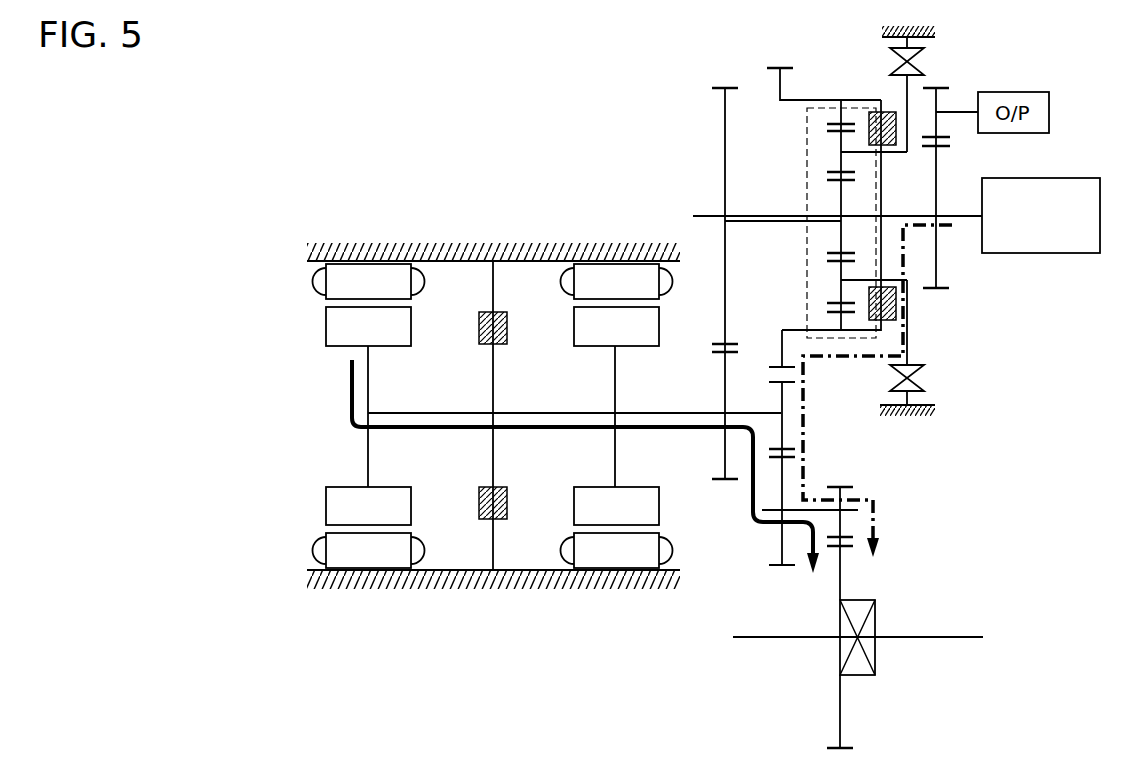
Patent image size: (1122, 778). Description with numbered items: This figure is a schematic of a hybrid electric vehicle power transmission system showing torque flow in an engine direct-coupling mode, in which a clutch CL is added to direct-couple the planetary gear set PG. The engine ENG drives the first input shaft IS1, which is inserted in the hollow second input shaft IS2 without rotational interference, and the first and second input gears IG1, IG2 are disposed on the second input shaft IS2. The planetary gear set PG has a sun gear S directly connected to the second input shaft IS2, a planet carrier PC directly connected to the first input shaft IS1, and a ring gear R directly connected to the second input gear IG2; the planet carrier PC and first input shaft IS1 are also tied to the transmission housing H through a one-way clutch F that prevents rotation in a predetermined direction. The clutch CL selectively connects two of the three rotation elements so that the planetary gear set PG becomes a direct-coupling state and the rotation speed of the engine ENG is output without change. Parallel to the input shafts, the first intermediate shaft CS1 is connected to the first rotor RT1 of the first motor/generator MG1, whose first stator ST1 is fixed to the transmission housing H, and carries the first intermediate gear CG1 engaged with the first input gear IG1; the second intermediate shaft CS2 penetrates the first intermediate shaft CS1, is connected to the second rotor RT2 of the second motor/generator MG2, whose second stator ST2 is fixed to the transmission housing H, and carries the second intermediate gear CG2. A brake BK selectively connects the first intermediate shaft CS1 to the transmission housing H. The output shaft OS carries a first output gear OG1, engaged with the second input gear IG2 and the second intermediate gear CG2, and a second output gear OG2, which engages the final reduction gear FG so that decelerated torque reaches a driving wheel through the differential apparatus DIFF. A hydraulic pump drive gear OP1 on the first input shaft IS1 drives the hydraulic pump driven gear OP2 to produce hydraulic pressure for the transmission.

The transmission housing H is at (519, 254).
The second stator ST2 is at (369, 416).
The second rotor RT2 is at (368, 416).
The second motor/generator MG2 is at (306, 304).
The first stator ST1 is at (617, 416).
The first rotor RT1 is at (616, 416).
The first motor/generator MG1 is at (557, 324).
The brake BK is at (463, 343).
The first intermediate shaft CS1 is at (567, 421).
The second intermediate shaft CS2 is at (419, 417).
The engine ENG is at (896, 215).
The second input shaft IS2 is at (775, 226).
The first input gear IG1 is at (722, 102).
The second input gear IG2 is at (778, 86).
The first intermediate gear CG1 is at (723, 384).
The planetary gear set PG is at (790, 285).
The ring gear R is at (837, 141).
The planet carrier PC is at (853, 152).
The sun gear S is at (836, 181).
The clutch CL is at (882, 104).
The one-way clutch F is at (872, 50).
The hydraulic pump driven gear OP2 is at (940, 100).
The hydraulic pump drive gear OP1 is at (940, 166).
The first input shaft IS1 is at (914, 227).
The second intermediate gear CG2 is at (784, 437).
The first output gear OG1 is at (785, 468).
The output shaft OS is at (774, 513).
The second output gear OG2 is at (848, 492).
The final reduction gear FG is at (847, 573).
The differential apparatus DIFF is at (878, 620).